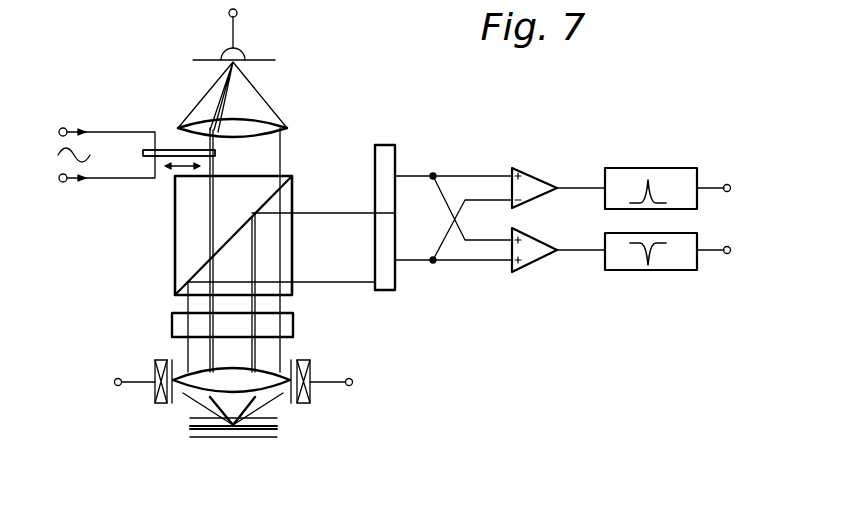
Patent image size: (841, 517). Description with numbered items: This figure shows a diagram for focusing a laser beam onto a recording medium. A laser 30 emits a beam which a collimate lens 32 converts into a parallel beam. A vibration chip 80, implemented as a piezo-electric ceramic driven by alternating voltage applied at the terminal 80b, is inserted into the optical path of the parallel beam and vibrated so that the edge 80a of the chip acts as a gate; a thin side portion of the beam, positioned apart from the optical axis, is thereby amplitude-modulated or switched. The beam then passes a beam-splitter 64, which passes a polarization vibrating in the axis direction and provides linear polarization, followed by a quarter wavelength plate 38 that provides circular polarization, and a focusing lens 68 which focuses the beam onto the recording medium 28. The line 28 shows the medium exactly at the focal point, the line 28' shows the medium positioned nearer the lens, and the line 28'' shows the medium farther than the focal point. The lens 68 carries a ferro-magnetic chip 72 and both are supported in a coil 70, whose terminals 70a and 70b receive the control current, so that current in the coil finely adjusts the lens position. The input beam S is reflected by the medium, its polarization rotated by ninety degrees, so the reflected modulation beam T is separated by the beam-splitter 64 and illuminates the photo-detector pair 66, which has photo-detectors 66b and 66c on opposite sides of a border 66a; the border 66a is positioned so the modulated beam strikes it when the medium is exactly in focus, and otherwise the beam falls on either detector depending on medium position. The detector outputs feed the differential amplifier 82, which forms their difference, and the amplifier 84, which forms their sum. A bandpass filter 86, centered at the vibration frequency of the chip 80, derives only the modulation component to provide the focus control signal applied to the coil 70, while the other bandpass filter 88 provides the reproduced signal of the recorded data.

The laser 30 is at (246, 52).
The collimate lens 32 is at (288, 124).
The vibration chip 80 is at (165, 149).
The edge of the chip 80a is at (215, 153).
The terminal 80b is at (106, 140).
The beam-splitter 64 is at (175, 248).
The input beam S is at (210, 210).
The ¼ wavelength plate 38 is at (172, 326).
The reflected modulation beam T is at (280, 306).
The focusing lens 68 is at (268, 368).
The coil 70 is at (155, 365).
The ferro-magnetic chip 72 is at (174, 365).
The coil terminal 70a is at (109, 386).
The coil terminal 70b is at (354, 386).
The line showing medium nearer the lens 28' is at (204, 428).
The recording medium 28 is at (257, 435).
The line showing medium farther than focal point 28'' is at (238, 462).
The photo-detector pair 66 is at (388, 136).
The border 66a is at (383, 213).
The photo-detector 66b is at (375, 170).
The photo-detector 66c is at (393, 287).
The differential amplifier 82 is at (536, 172).
The amplifier 84 is at (536, 268).
The bandpass filter 86 is at (650, 168).
The bandpass filter 88 is at (652, 271).